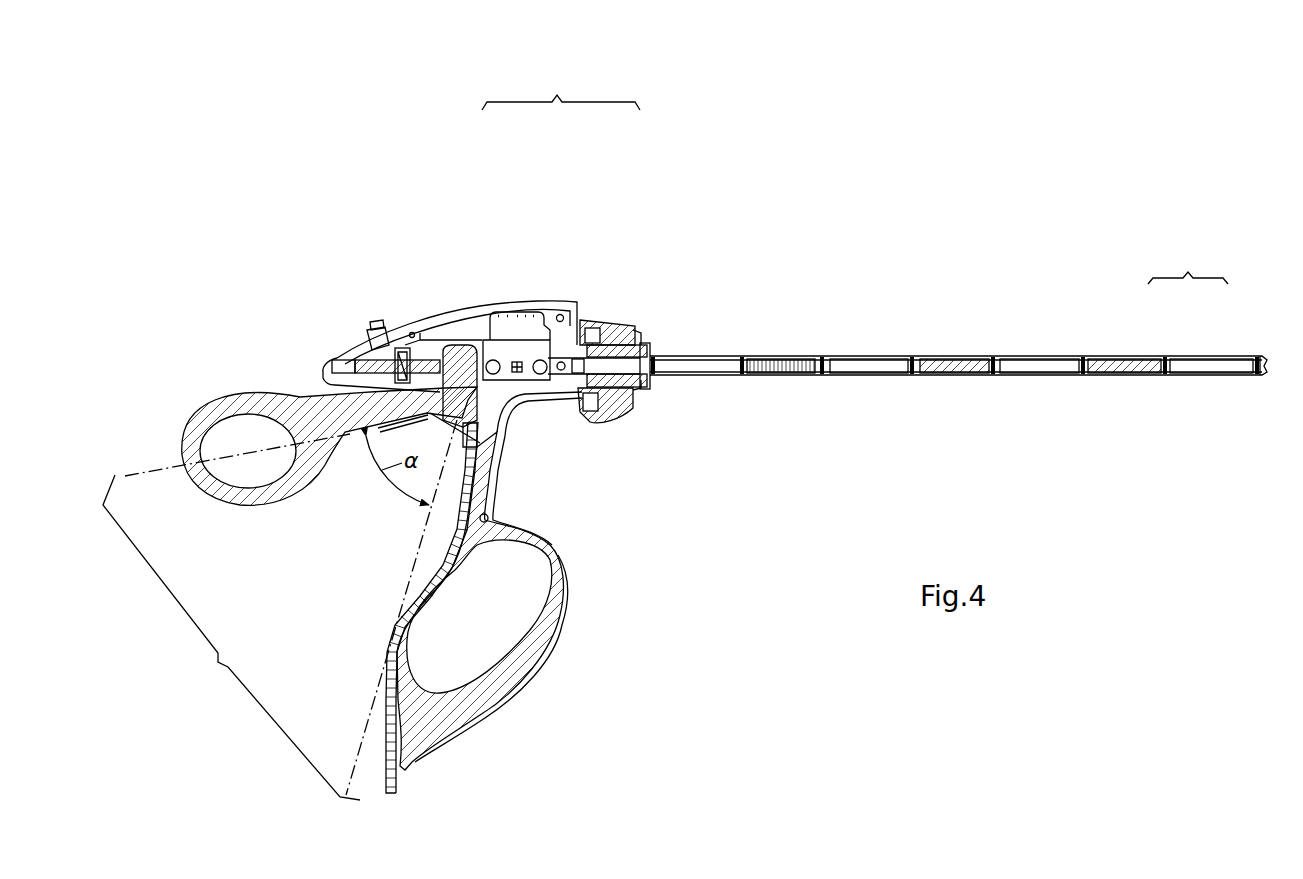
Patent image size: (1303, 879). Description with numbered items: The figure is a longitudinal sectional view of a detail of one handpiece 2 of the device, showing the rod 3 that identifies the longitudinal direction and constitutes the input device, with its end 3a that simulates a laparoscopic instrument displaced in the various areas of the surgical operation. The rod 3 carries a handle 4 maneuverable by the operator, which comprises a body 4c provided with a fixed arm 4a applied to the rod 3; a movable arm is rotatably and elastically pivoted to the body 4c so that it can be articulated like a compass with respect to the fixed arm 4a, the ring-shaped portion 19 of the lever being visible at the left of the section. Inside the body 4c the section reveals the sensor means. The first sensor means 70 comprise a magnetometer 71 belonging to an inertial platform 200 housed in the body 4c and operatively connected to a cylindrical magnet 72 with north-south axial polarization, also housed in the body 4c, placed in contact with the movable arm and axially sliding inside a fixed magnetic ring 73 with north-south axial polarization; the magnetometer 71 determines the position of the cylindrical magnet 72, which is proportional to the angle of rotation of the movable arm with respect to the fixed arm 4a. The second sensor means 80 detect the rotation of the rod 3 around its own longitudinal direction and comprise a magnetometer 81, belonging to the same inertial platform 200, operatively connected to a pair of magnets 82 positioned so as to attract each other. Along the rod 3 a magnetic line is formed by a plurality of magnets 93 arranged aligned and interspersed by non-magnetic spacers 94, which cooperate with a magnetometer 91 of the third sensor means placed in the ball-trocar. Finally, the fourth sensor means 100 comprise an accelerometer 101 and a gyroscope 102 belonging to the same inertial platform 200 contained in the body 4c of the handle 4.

The handpiece 2 is at (805, 230).
The rod 3 is at (958, 396).
The end of the rod 3a is at (1263, 376).
The handle 4 is at (213, 667).
The fixed arm 4a is at (417, 707).
The body of the handle 4c is at (517, 330).
The movable handle lever with finger ring 19 is at (222, 413).
The first sensor means 70 is at (475, 184).
The magnetometer 71 is at (650, 193).
The cylindrical magnet 72 is at (365, 362).
The fixed magnetic ring 73 is at (402, 355).
The second sensor means 80 is at (652, 428).
The magnetometer 81 is at (520, 326).
The pair of magnets 82 is at (596, 333).
The magnetometer 91 is at (1186, 274).
The magnets 93 is at (1213, 365).
The non-magnetic spacers 94 is at (1128, 362).
The fourth sensor means 100 is at (634, 160).
The accelerometer 101 is at (516, 360).
The gyroscope 102 is at (529, 367).
The inertial platform 200 is at (561, 92).